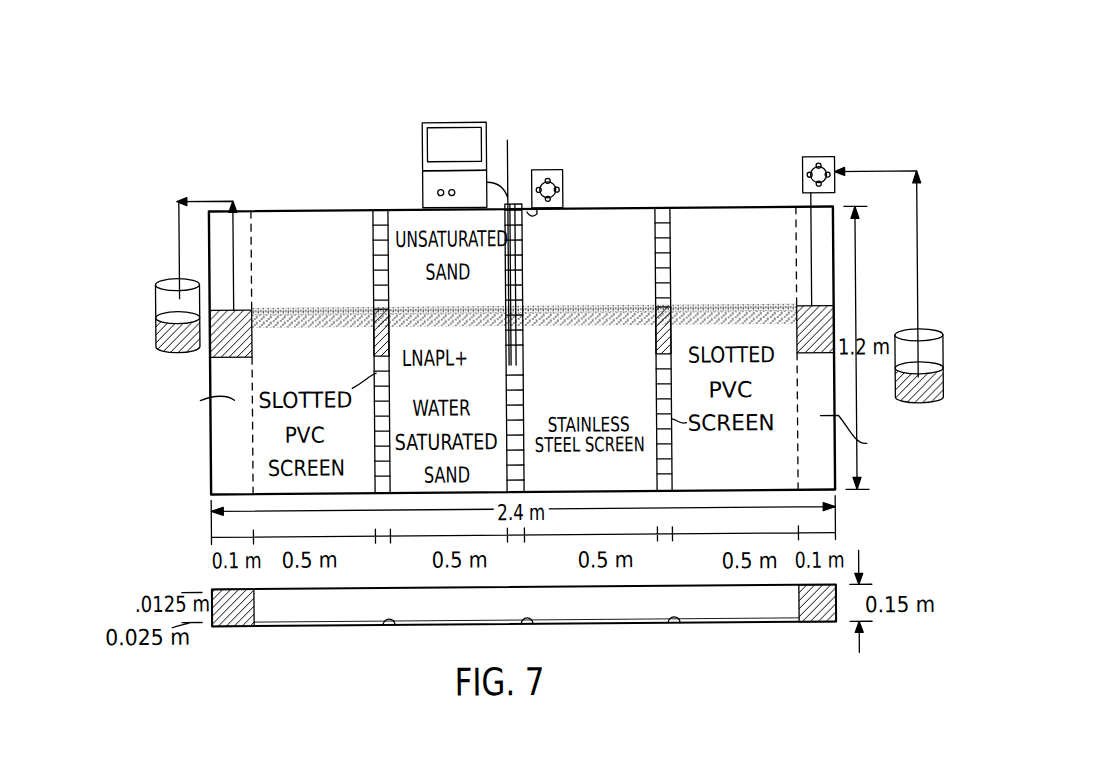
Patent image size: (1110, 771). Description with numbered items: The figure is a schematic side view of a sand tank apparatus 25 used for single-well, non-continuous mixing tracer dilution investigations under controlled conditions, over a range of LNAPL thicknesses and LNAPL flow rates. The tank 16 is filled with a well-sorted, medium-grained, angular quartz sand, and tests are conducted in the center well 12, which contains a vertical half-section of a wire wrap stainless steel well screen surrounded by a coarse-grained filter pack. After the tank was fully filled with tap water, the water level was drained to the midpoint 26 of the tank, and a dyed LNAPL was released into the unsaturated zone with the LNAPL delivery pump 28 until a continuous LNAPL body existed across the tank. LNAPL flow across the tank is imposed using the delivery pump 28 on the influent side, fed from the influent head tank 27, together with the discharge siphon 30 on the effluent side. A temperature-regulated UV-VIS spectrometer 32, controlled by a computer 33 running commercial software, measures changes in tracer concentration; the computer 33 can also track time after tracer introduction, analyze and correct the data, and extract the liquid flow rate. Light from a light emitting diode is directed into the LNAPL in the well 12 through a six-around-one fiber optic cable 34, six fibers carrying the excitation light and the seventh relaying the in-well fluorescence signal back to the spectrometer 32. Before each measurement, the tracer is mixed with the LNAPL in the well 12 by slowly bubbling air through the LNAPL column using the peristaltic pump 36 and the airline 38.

The center well 12 is at (524, 373).
The tank 16 is at (838, 318).
The experimental apparatus 25 is at (552, 299).
The midpoint 26 is at (704, 305).
The influent head tank 27 is at (946, 346).
The LNAPL delivery pump 28 is at (898, 136).
The discharge siphon 30 is at (235, 142).
The UV-VIS spectrometer 32 is at (424, 150).
The computer 33 is at (424, 196).
The fiber optic cable 34 is at (512, 148).
The peristaltic pump 36 is at (660, 182).
The airline 38 is at (646, 232).